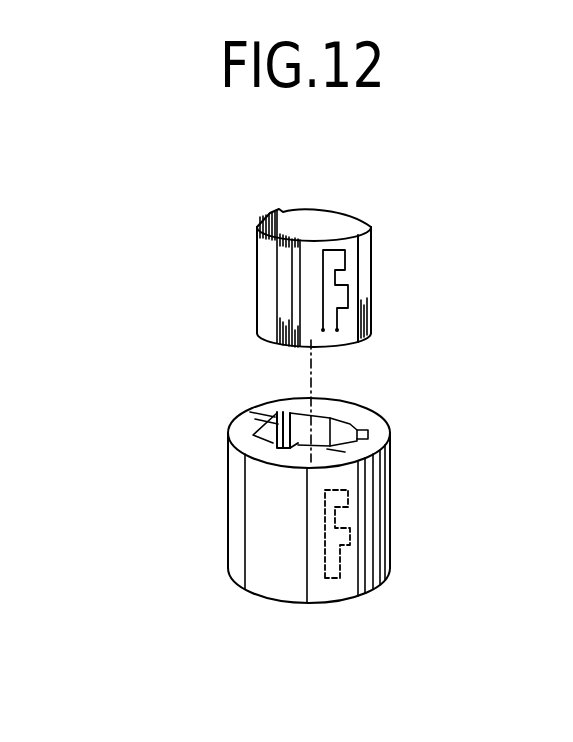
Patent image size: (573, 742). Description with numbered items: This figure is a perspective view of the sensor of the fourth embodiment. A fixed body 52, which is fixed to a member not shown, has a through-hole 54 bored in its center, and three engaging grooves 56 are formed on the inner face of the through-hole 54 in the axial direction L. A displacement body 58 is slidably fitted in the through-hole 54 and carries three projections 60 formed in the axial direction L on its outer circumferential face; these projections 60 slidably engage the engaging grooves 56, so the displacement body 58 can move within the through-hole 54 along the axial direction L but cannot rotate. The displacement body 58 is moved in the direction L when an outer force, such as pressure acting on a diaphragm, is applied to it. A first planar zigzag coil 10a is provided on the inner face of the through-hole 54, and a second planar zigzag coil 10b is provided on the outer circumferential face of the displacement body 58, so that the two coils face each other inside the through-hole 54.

The displacement body 58 is at (245, 252).
The projections 60 is at (281, 206).
The second planar zigzag coil 10b is at (358, 278).
The axial direction L is at (310, 383).
The fixed body 52 is at (400, 530).
The engaging grooves 56 is at (272, 416).
The through-hole 54 is at (322, 428).
The first planar zigzag coil 10a is at (325, 542).